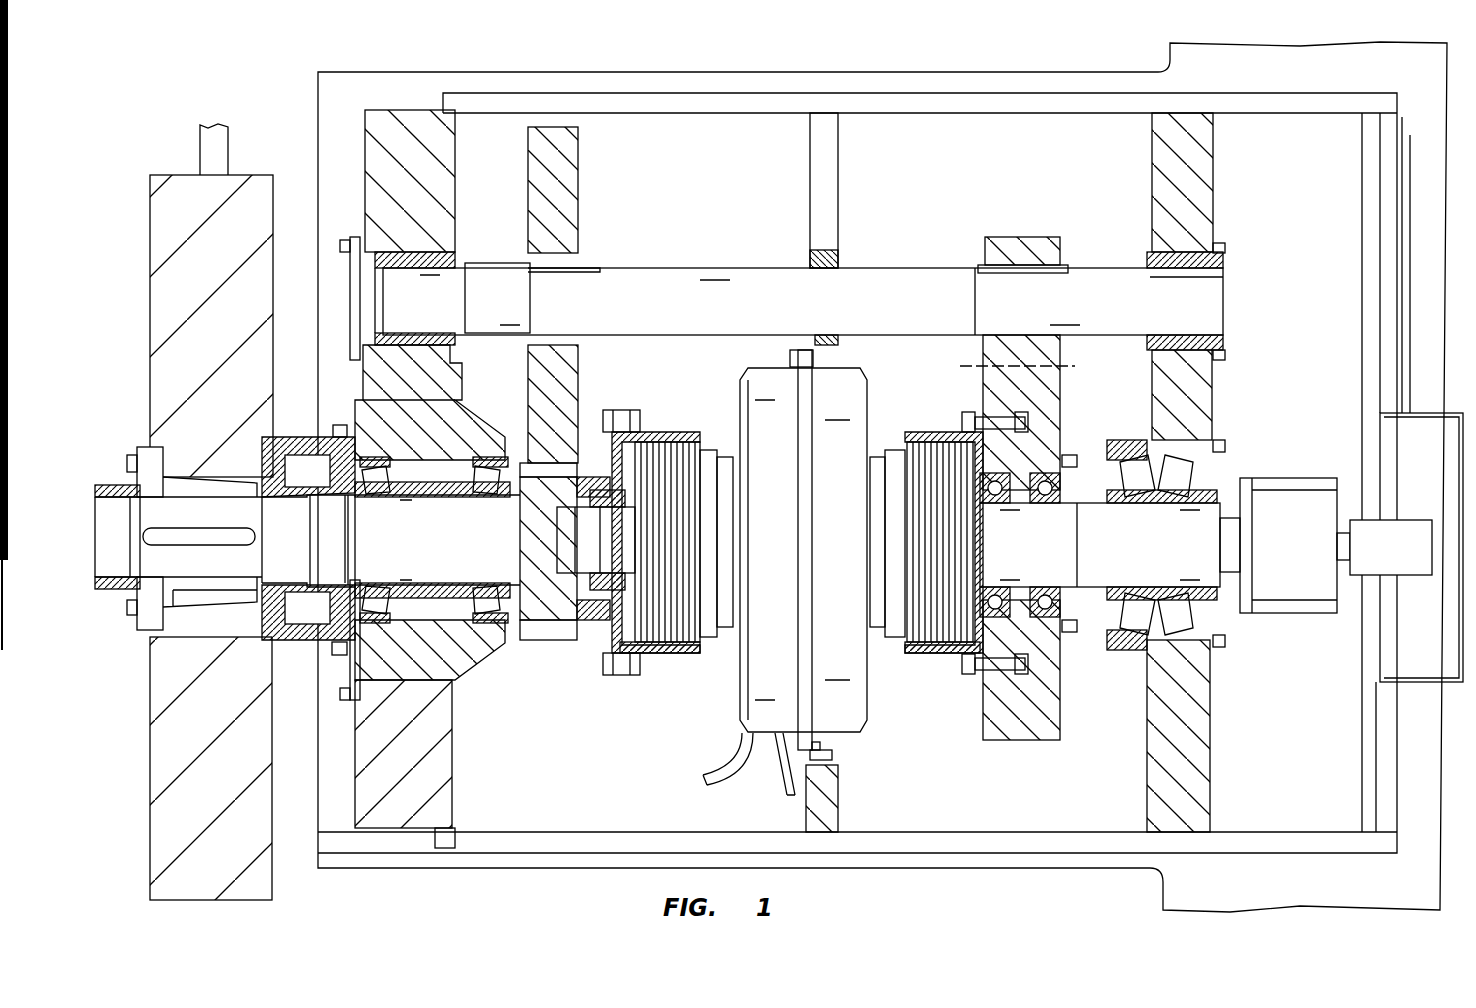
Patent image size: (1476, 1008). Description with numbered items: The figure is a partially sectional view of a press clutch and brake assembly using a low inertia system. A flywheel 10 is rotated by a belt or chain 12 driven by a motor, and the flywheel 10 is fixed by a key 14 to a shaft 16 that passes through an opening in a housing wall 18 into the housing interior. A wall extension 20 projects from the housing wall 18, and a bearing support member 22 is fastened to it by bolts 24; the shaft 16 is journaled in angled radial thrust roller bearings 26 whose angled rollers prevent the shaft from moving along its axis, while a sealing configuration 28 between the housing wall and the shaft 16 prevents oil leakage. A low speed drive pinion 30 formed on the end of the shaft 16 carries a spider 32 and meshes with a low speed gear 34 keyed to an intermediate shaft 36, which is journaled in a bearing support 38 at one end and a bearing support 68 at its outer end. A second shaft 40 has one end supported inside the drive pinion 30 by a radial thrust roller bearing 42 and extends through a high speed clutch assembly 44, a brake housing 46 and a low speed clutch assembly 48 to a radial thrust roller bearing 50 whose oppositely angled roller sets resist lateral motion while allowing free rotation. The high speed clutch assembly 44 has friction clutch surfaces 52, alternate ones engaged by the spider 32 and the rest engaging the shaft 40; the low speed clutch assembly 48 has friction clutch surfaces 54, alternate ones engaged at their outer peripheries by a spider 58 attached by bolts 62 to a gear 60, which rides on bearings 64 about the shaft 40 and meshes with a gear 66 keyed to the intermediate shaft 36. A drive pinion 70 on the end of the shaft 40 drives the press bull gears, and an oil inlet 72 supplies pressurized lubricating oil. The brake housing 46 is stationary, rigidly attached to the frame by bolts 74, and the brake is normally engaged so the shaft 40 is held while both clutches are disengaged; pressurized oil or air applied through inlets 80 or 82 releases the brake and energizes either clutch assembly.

The flywheel 10 is at (231, 266).
The belt or chain 12 is at (207, 147).
The key 14 is at (222, 535).
The shaft 16 is at (98, 535).
The housing wall 18 is at (325, 297).
The wall extension 20 is at (421, 161).
The bearing support member 22 is at (444, 428).
The bolts 24 is at (340, 425).
The angled radial thrust roller bearings 26 is at (478, 478).
The sealing configuration 28 is at (295, 434).
The low speed drive pinion 30 is at (555, 620).
The spider 32 is at (668, 652).
The low speed gear 34 is at (560, 400).
The intermediate shaft 36 is at (712, 290).
The bearing support 38 is at (437, 258).
The shaft 40 is at (621, 541).
The radial thrust roller bearing 42 is at (604, 493).
The high speed clutch assembly 44 is at (698, 434).
The brake housing 46 is at (784, 523).
The low speed clutch assembly 48 is at (910, 434).
The radial thrust roller bearing 50 is at (1175, 475).
The friction clutch surfaces 52 is at (657, 460).
The friction clutch surfaces 54 is at (935, 652).
The spider 58 is at (905, 648).
The gear 60 is at (1040, 405).
The bolts 62 is at (975, 422).
The bearings 64 is at (1012, 500).
The gear 66 is at (1045, 258).
The bearing support 68 is at (1212, 270).
The drive pinion 70 is at (1290, 485).
The oil inlet 72 is at (1398, 540).
The bolts 74 is at (845, 368).
The inlet 80 is at (715, 772).
The inlet 82 is at (780, 770).